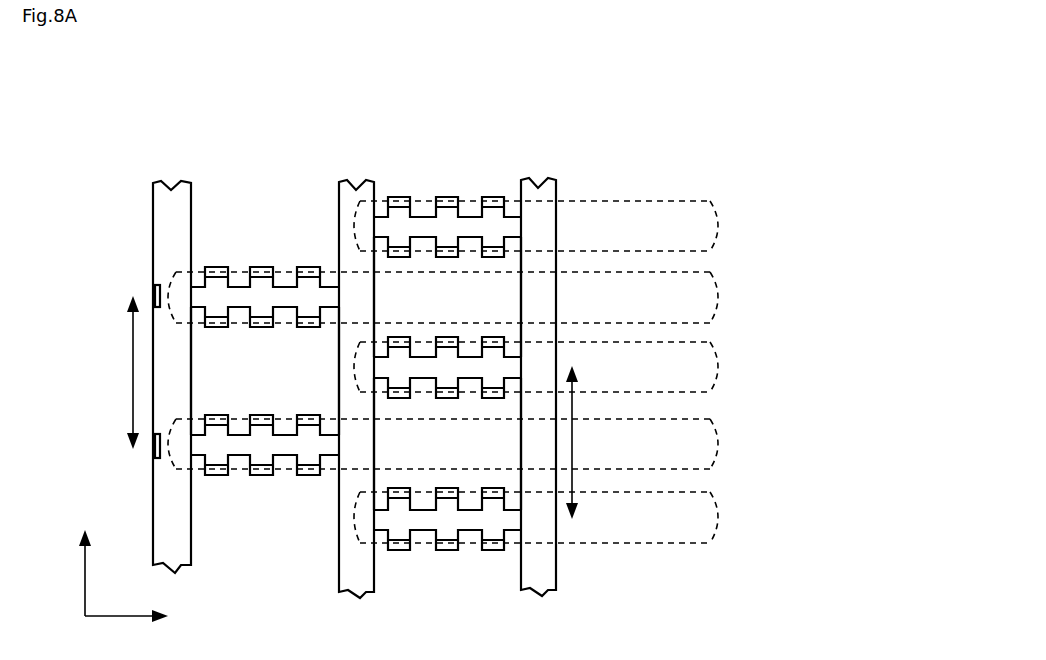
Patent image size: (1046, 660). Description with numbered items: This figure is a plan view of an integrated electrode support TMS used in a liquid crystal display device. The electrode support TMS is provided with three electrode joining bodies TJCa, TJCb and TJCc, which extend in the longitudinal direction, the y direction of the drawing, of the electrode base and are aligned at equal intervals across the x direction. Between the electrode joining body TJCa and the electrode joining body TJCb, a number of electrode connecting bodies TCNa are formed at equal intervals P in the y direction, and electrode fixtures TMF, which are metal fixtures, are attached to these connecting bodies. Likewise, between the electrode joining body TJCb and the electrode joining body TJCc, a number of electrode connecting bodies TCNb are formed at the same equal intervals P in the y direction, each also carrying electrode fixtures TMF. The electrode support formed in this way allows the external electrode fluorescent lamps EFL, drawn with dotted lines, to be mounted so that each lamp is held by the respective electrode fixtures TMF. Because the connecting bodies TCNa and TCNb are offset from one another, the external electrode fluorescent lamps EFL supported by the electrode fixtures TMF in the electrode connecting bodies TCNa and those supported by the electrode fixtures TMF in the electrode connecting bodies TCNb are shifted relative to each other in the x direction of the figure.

The electrode support TMS is at (252, 142).
The external electrode fluorescent lamp EFL is at (172, 277).
The electrode fixture TMF is at (215, 262).
The electrode connecting body TCNa is at (280, 296).
The electrode connecting body TCNb is at (462, 225).
The electrode joining body TJCa is at (170, 357).
The electrode joining body TJCb is at (352, 485).
The electrode joining body TJCc is at (543, 257).
The interval P is at (353, 407).